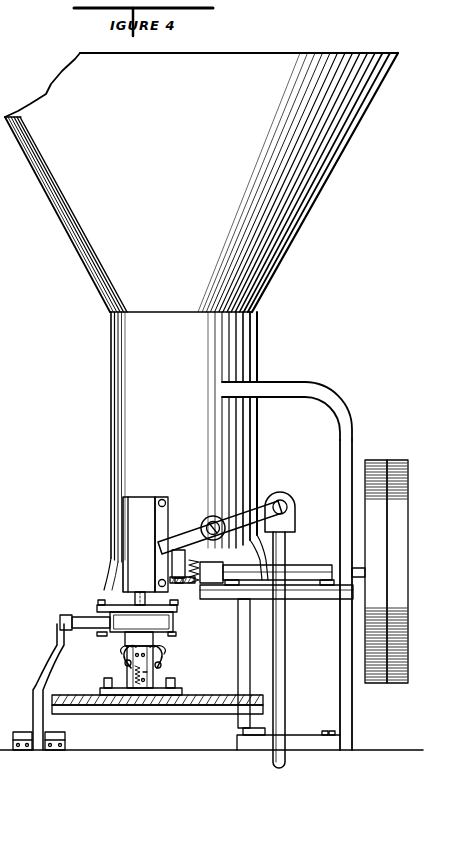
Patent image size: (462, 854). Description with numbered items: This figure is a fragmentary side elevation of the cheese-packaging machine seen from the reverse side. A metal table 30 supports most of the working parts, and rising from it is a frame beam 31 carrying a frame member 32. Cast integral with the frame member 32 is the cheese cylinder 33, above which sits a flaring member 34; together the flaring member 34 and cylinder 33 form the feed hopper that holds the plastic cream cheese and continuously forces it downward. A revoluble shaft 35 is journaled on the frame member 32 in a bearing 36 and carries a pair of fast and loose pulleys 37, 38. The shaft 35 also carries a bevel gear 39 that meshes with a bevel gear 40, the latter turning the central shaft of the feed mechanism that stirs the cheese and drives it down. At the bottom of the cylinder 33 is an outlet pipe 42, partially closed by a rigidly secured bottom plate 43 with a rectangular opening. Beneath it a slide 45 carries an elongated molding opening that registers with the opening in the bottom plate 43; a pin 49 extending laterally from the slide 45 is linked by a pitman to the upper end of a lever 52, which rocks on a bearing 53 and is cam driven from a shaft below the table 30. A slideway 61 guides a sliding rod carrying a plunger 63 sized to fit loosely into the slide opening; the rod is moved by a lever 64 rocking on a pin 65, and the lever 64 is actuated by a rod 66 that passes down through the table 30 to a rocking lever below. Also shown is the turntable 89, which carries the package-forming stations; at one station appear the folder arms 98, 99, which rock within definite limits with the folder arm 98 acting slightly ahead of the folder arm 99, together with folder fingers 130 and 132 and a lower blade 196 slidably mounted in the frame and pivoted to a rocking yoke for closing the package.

The table 30 is at (378, 750).
The frame beam 31 is at (345, 686).
The frame member 32 is at (318, 385).
The cheese cylinder 33 is at (118, 437).
The flaring member 34 is at (45, 170).
The revoluble shaft 35 is at (233, 572).
The bearing 36 is at (194, 584).
The pulley 37 is at (378, 462).
The pulley 38 is at (401, 462).
The bevel gear 39 is at (198, 566).
The bevel gear 40 is at (181, 585).
The outlet pipe 42 is at (107, 568).
The bottom plate 43 is at (100, 612).
The slide 45 is at (100, 634).
The pin 49 is at (80, 617).
The lever 52 is at (55, 657).
The bearing 53 is at (65, 738).
The slideway 61 is at (130, 533).
The plunger 63 is at (137, 600).
The lever 64 is at (257, 510).
The pin 65 is at (221, 519).
The rod 66 is at (285, 630).
The turntable 89 is at (228, 696).
The folder arm 98 is at (122, 660).
The folder arm 99 is at (172, 650).
The folder finger 130 is at (118, 675).
The folder finger 132 is at (160, 668).
The lower blade 196 is at (162, 684).